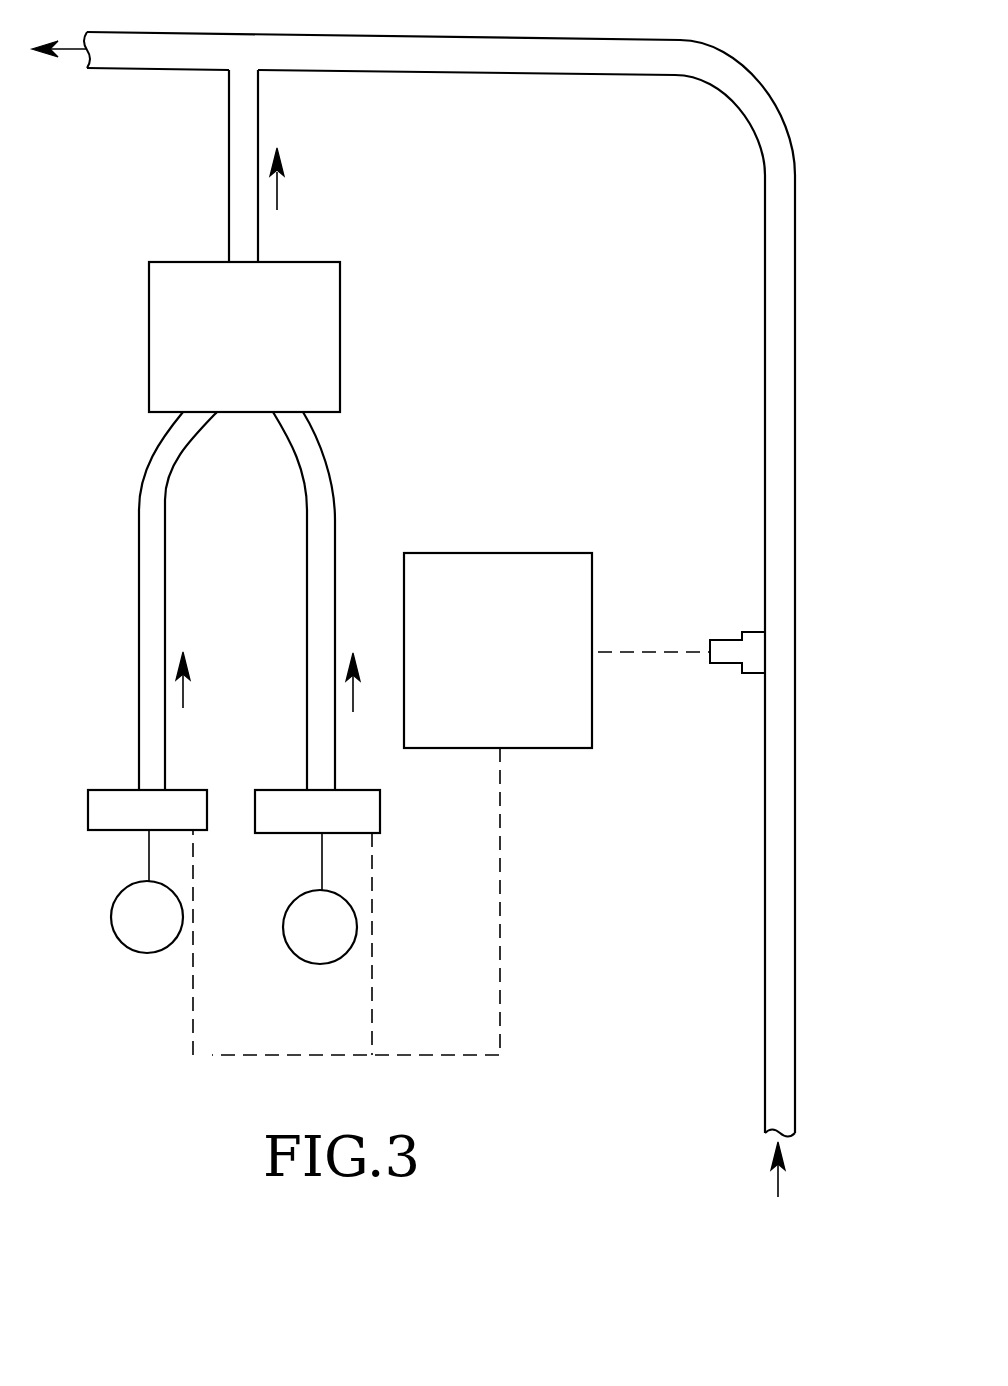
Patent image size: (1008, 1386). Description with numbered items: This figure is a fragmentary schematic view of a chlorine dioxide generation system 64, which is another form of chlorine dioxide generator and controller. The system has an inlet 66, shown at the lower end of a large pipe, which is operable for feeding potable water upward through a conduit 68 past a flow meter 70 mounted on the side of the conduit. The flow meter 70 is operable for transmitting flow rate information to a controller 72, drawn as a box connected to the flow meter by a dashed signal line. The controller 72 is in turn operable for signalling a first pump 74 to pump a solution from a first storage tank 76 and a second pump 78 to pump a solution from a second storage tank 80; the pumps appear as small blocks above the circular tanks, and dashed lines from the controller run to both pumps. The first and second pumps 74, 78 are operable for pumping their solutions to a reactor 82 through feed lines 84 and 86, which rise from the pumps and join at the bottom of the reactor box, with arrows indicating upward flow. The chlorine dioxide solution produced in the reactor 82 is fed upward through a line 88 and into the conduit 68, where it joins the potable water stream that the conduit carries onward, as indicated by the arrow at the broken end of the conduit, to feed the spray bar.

The chlorine dioxide generation system 64 is at (785, 100).
The inlet 66 is at (796, 1123).
The conduit 68 is at (765, 405).
The flow meter 70 is at (728, 640).
The controller 72 is at (593, 572).
The first pump 74 is at (364, 790).
The first storage tank 76 is at (306, 964).
The second pump 78 is at (188, 790).
The second storage tank 80 is at (141, 954).
The reactor 82 is at (342, 345).
The feed line 84 is at (336, 528).
The feed line 86 is at (167, 538).
The line 88 is at (259, 118).